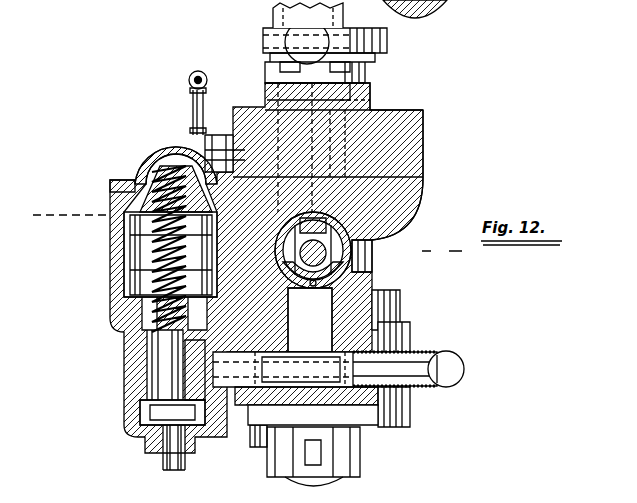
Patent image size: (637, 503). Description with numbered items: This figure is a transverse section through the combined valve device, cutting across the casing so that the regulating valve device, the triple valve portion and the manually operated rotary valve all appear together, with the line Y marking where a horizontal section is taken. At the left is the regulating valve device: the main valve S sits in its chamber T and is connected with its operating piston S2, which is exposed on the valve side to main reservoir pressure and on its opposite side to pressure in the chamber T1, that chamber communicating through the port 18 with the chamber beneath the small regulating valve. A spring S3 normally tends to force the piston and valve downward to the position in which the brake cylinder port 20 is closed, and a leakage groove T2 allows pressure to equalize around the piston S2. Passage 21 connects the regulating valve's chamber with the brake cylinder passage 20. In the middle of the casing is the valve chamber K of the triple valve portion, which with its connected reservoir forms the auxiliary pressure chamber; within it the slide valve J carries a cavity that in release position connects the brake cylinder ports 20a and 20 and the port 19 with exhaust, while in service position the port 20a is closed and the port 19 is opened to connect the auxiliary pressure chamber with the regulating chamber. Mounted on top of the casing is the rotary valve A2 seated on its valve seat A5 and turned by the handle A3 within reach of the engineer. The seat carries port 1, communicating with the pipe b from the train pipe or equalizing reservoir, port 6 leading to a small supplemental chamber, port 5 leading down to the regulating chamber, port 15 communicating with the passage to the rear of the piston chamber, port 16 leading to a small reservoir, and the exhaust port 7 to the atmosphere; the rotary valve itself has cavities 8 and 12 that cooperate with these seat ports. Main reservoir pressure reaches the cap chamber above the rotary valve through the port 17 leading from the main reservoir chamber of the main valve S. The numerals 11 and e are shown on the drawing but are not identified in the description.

The port 1 is at (243, 106).
The port 5 is at (345, 100).
The port 6 is at (350, 106).
The exhaust port 7 is at (218, 140).
The cavity 8 is at (340, 82).
The housing cap 11 is at (268, 52).
The cavity 12 is at (262, 96).
The port 15 is at (312, 465).
The port 16 is at (318, 471).
The port 17 is at (268, 78).
The port 18 is at (175, 152).
The port 19 is at (372, 288).
The brake cylinder port 20 is at (311, 374).
The brake cylinder port 20a is at (310, 320).
The passage 21 is at (300, 369).
The rotary valve A2 is at (370, 83).
The handle A3 is at (300, 38).
The valve seat A5 is at (415, 132).
The pipe b is at (194, 108).
The outlet pipe e is at (450, 363).
The slide valve J is at (385, 260).
The valve chamber K is at (335, 244).
The main valve S is at (183, 360).
The operating piston S2 is at (130, 262).
The spring S3 is at (160, 257).
The chamber T is at (172, 414).
The chamber T1 is at (128, 183).
The leakage groove T2 is at (128, 288).
The section line Y is at (239, 235).